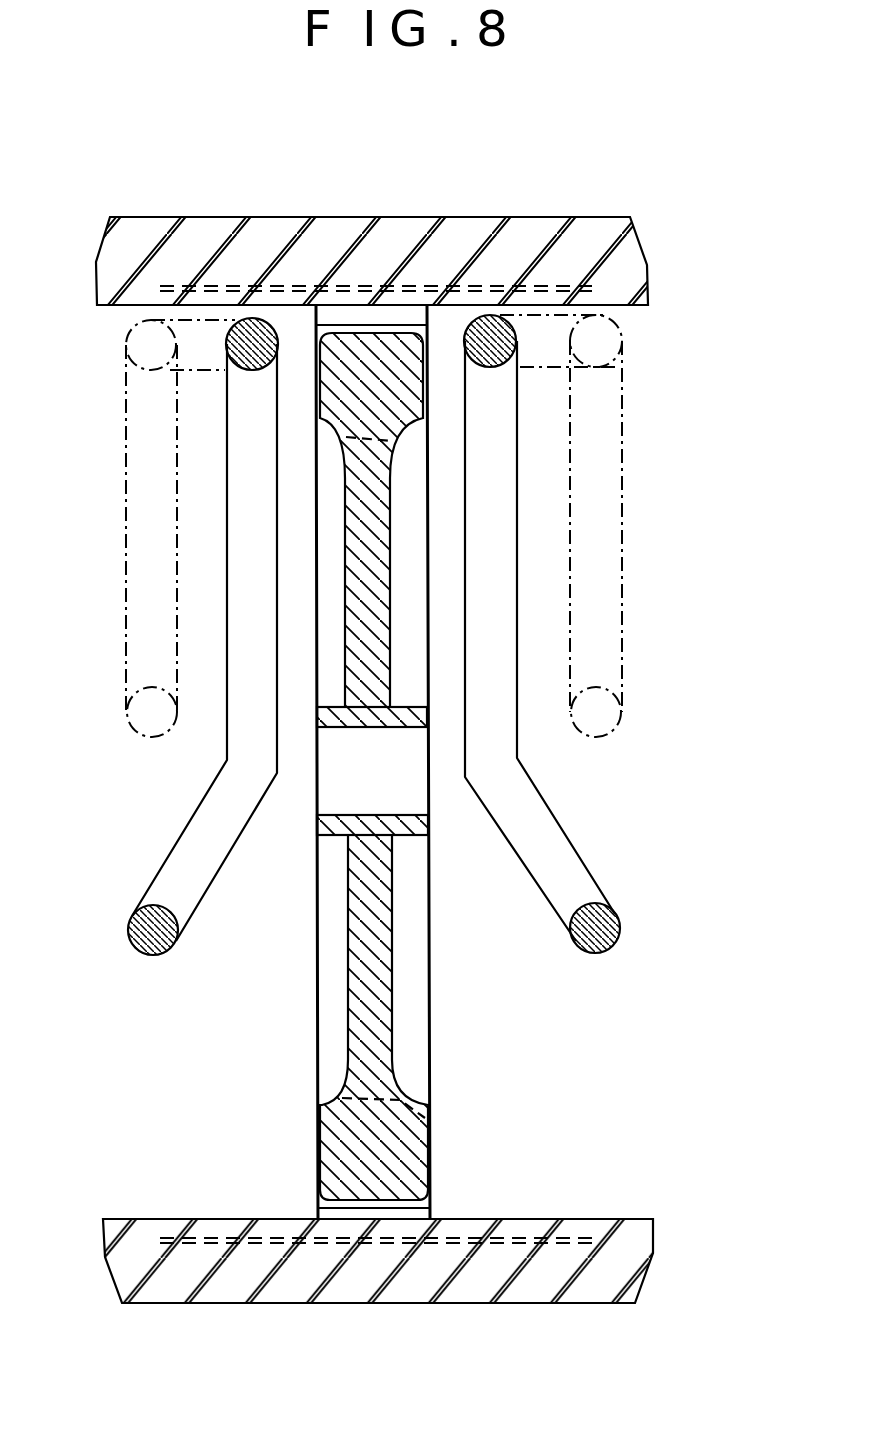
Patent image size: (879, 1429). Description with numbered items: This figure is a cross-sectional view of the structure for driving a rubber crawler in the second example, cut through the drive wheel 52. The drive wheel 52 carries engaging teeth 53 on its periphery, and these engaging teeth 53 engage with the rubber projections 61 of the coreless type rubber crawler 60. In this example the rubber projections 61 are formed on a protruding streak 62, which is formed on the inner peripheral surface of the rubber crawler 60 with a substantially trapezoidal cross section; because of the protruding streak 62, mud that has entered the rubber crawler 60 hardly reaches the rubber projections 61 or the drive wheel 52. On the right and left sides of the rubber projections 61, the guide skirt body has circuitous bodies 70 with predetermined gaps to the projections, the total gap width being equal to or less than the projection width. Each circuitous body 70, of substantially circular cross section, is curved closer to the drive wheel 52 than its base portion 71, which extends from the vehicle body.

The drive wheel 52 is at (385, 952).
The engaging teeth 53 is at (338, 442).
The rubber crawler 60 is at (543, 235).
The rubber projections 61 is at (398, 447).
The protruding streak 62 is at (378, 317).
The circuitous bodies 70 is at (228, 367).
The base portion 71 is at (175, 884).